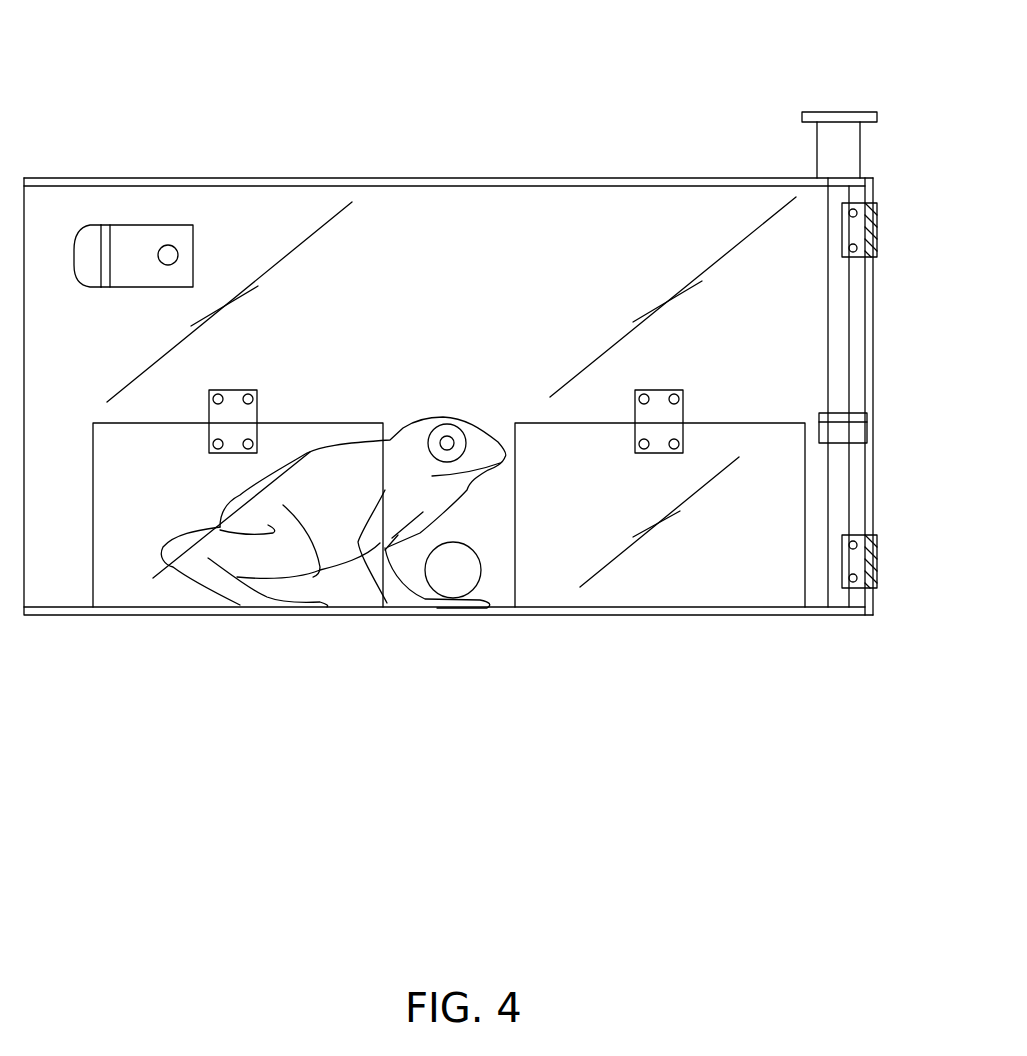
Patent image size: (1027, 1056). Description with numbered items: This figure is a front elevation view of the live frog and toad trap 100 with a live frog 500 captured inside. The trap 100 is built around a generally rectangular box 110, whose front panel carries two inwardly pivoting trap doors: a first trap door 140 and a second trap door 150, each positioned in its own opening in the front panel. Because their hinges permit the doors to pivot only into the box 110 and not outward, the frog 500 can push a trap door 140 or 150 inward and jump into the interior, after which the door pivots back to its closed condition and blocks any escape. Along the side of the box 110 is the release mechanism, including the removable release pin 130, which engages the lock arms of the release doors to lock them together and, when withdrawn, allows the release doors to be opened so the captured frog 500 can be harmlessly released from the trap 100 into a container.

The trap 100 is at (166, 57).
The box 110 is at (400, 178).
The release pin 130 is at (851, 330).
The first trap door 140 is at (163, 590).
The second trap door 150 is at (692, 585).
The frog 500 is at (343, 563).